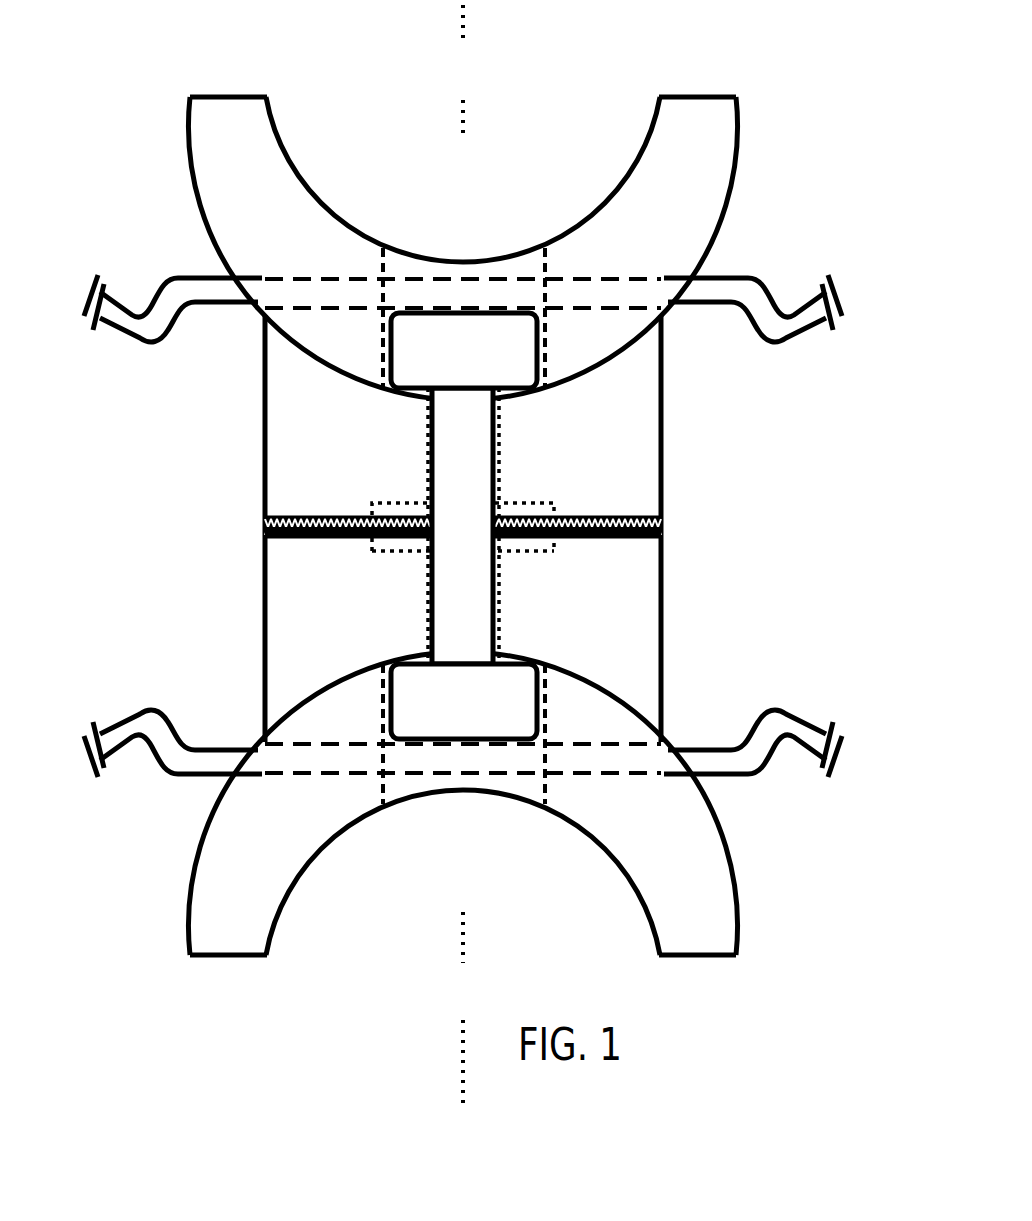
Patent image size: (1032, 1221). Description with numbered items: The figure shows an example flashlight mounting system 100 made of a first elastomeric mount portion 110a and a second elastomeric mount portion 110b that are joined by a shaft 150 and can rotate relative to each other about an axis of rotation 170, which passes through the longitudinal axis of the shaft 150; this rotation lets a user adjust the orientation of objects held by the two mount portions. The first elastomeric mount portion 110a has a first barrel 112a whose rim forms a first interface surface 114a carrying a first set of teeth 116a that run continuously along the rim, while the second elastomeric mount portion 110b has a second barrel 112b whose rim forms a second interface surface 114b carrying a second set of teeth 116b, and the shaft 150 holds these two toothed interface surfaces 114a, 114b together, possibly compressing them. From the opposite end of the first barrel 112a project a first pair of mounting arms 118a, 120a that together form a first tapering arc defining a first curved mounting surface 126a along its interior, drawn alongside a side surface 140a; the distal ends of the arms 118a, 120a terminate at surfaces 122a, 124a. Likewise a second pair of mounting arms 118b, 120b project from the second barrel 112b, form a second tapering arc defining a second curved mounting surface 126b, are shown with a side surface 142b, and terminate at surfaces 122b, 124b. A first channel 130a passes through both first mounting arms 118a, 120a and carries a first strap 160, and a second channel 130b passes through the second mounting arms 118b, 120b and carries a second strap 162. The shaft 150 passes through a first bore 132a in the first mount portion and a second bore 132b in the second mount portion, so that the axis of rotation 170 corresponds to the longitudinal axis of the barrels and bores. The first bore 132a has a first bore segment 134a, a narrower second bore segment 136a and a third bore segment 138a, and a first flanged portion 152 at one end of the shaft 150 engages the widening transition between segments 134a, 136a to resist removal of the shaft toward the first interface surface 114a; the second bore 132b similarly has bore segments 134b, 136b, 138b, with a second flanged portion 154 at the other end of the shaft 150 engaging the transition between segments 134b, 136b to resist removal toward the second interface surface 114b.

The flashlight mounting system 100 is at (780, 77).
The first elastomeric mount portion 110a is at (652, 440).
The second elastomeric mount portion 110b is at (652, 660).
The first barrel 112a is at (295, 445).
The second barrel 112b is at (295, 625).
The first interface surface 114a is at (665, 514).
The second interface surface 114b is at (280, 536).
The first set of teeth 116a is at (665, 527).
The second set of teeth 116b is at (275, 525).
The mounting arm 118a is at (228, 175).
The mounting arm 118b is at (245, 880).
The mounting arm 120a is at (680, 175).
The mounting arm 120b is at (698, 880).
The surface 122a is at (229, 94).
The surface 122b is at (229, 958).
The surface 124a is at (698, 94).
The surface 124b is at (698, 958).
The first curved mounting surface 126a is at (299, 170).
The second curved mounting surface 126b is at (337, 845).
The first channel 130a is at (235, 293).
The second channel 130b is at (235, 757).
The first bore 132a is at (463, 306).
The second bore 132b is at (463, 746).
The first bore segment 134a is at (380, 253).
The first bore segment 134b is at (380, 793).
The second bore segment 136a is at (425, 462).
The second bore segment 136b is at (425, 606).
The third bore segment 138a is at (370, 502).
The third bore segment 138b is at (370, 551).
The side surface 140a is at (646, 248).
The side surface 142b is at (647, 844).
The shaft 150 is at (460, 447).
The first flanged portion 152 is at (445, 352).
The second flanged portion 154 is at (518, 697).
The first strap 160 is at (140, 325).
The second strap 162 is at (150, 720).
The axis of rotation 170 is at (463, 557).